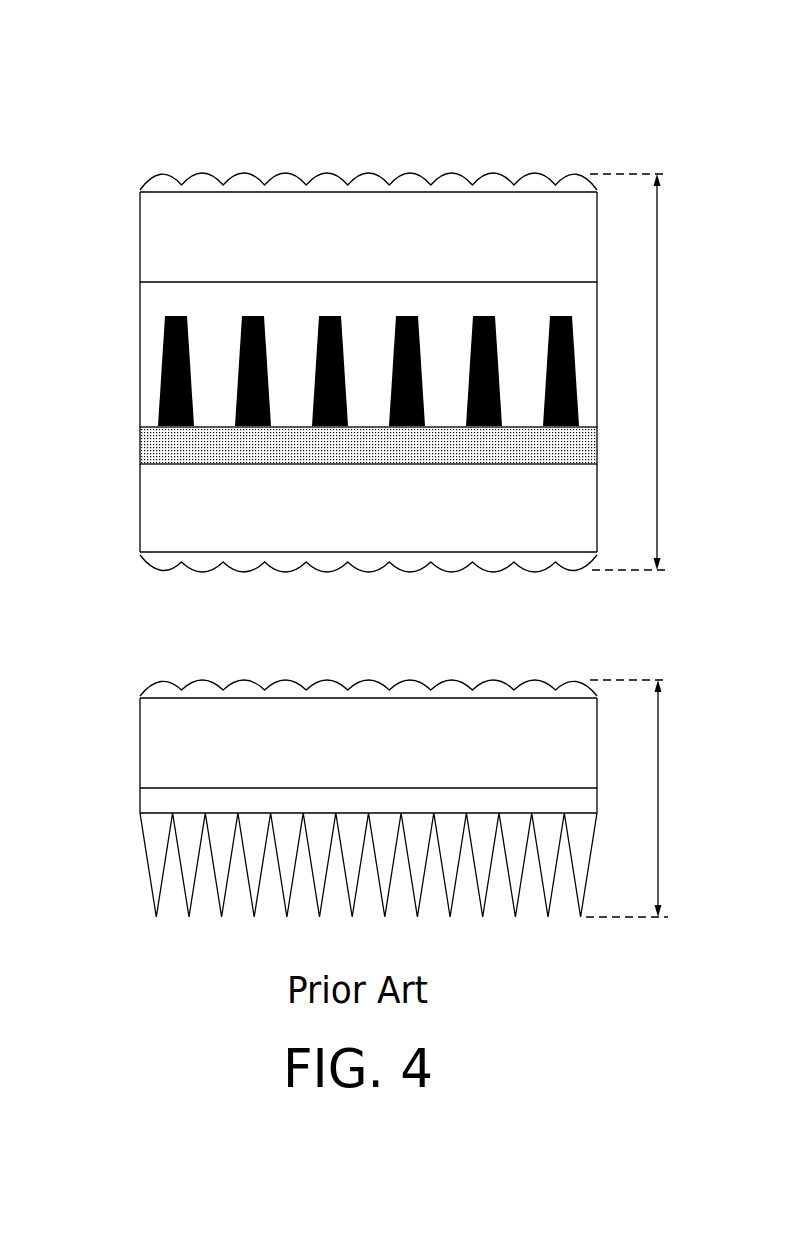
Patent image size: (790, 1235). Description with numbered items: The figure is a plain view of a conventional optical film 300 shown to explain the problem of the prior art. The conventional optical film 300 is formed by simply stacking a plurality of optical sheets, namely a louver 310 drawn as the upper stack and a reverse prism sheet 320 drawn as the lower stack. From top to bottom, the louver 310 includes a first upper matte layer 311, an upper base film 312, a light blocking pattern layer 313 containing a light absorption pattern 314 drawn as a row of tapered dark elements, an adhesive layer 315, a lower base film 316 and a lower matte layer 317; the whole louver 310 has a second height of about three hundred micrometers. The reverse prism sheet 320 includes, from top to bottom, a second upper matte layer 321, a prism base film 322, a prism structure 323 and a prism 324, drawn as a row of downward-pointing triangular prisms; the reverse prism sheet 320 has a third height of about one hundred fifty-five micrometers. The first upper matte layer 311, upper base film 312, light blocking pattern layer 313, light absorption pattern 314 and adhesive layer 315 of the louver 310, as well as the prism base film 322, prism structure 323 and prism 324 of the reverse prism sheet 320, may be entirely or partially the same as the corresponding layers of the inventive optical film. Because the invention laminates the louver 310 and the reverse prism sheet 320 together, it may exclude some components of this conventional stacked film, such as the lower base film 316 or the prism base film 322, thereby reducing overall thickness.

The conventional optical film 300 is at (153, 66).
The louver 310 is at (380, 156).
The first upper matte layer 311 is at (148, 185).
The upper base film 312 is at (148, 240).
The light blocking pattern layer 313 is at (148, 302).
The light absorption pattern 314 is at (162, 367).
The adhesive layer 315 is at (148, 447).
The lower base film 316 is at (148, 517).
The lower matte layer 317 is at (148, 567).
The reverse prism sheet 320 is at (380, 663).
The second upper matte layer 321 is at (148, 692).
The prism base film 322 is at (148, 747).
The prism structure 323 is at (148, 809).
The prism 324 is at (148, 860).